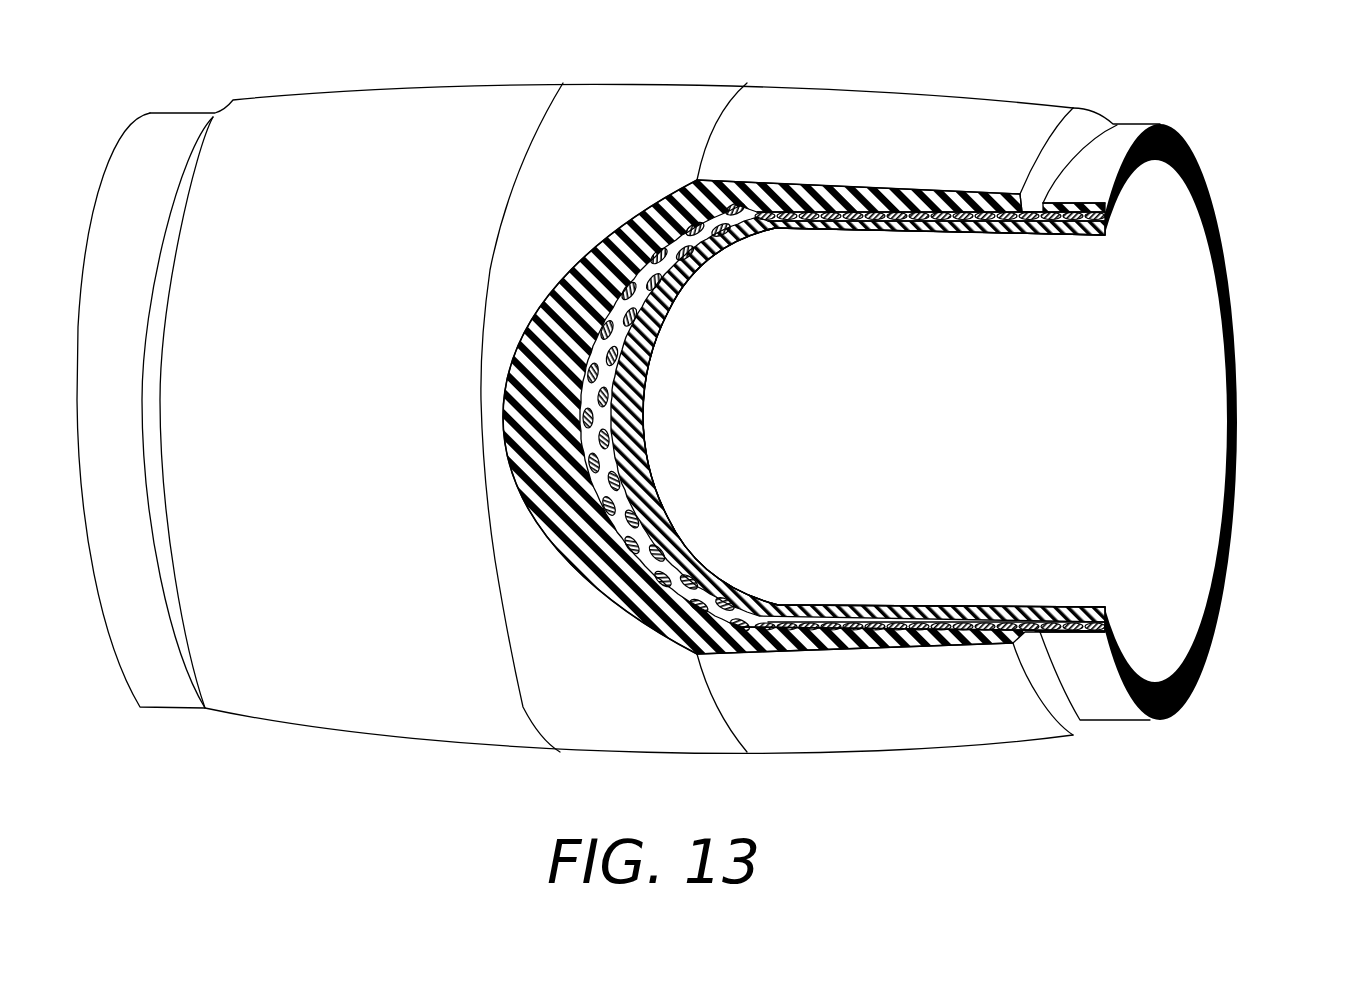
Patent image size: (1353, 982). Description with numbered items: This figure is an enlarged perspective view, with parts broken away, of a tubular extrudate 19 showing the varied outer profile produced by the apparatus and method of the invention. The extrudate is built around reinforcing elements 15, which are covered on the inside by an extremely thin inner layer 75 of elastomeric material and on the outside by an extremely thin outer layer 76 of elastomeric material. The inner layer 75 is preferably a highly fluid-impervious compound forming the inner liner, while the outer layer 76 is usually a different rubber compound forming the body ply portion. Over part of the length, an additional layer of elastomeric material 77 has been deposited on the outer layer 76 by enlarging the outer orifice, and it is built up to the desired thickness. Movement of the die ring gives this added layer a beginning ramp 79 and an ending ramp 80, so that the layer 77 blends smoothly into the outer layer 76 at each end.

The reinforcing elements 15 is at (1200, 667).
The tubular extrudate 19 is at (383, 738).
The inner layer 75 is at (963, 235).
The outer layer 76 is at (1092, 693).
The layer of elastomeric material 77 is at (940, 138).
The beginning ramp 79 is at (1073, 120).
The ending ramp 80 is at (727, 110).